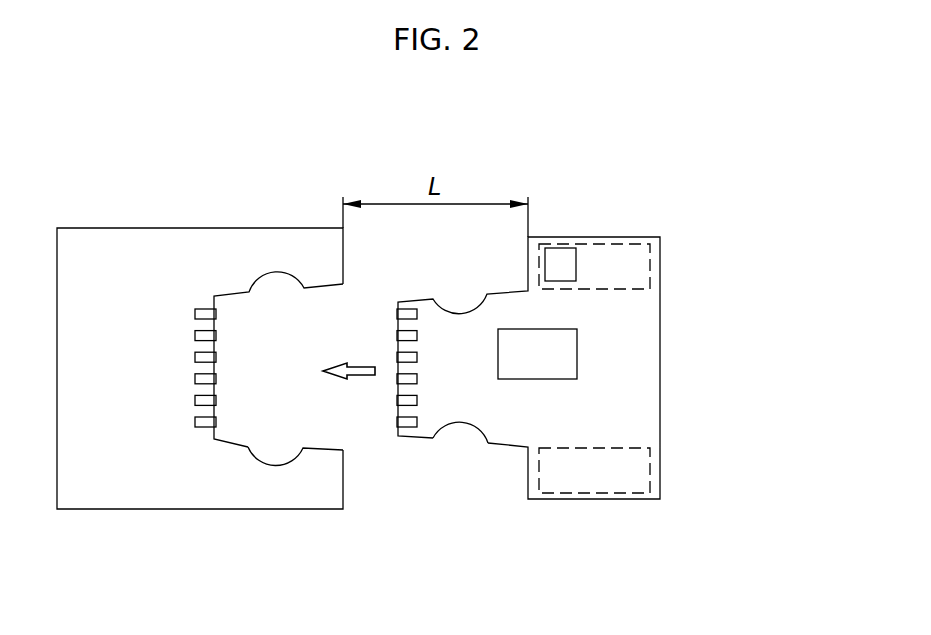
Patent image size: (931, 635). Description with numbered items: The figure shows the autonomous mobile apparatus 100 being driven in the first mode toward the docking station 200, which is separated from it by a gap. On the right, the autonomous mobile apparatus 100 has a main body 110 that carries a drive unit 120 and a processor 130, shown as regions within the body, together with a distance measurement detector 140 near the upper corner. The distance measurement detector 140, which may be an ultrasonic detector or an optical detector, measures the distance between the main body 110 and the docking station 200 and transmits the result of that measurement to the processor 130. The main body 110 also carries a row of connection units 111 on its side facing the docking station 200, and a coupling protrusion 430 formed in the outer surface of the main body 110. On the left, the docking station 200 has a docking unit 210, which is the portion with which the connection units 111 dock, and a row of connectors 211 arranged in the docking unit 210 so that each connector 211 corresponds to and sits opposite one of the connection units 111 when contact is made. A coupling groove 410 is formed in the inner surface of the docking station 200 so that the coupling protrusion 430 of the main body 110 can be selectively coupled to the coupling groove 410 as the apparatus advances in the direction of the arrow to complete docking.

The autonomous mobile apparatus 100 is at (597, 350).
The main body 110 is at (593, 415).
The connection unit 111 is at (409, 428).
The drive unit 120 is at (650, 473).
The processor 130 is at (565, 353).
The distance measurement detector 140 is at (560, 248).
The docking station 200 is at (200, 362).
The docking unit 210 is at (275, 379).
The connectors 211 is at (205, 427).
The coupling groove 410 is at (263, 458).
The coupling protrusion 430 is at (463, 452).